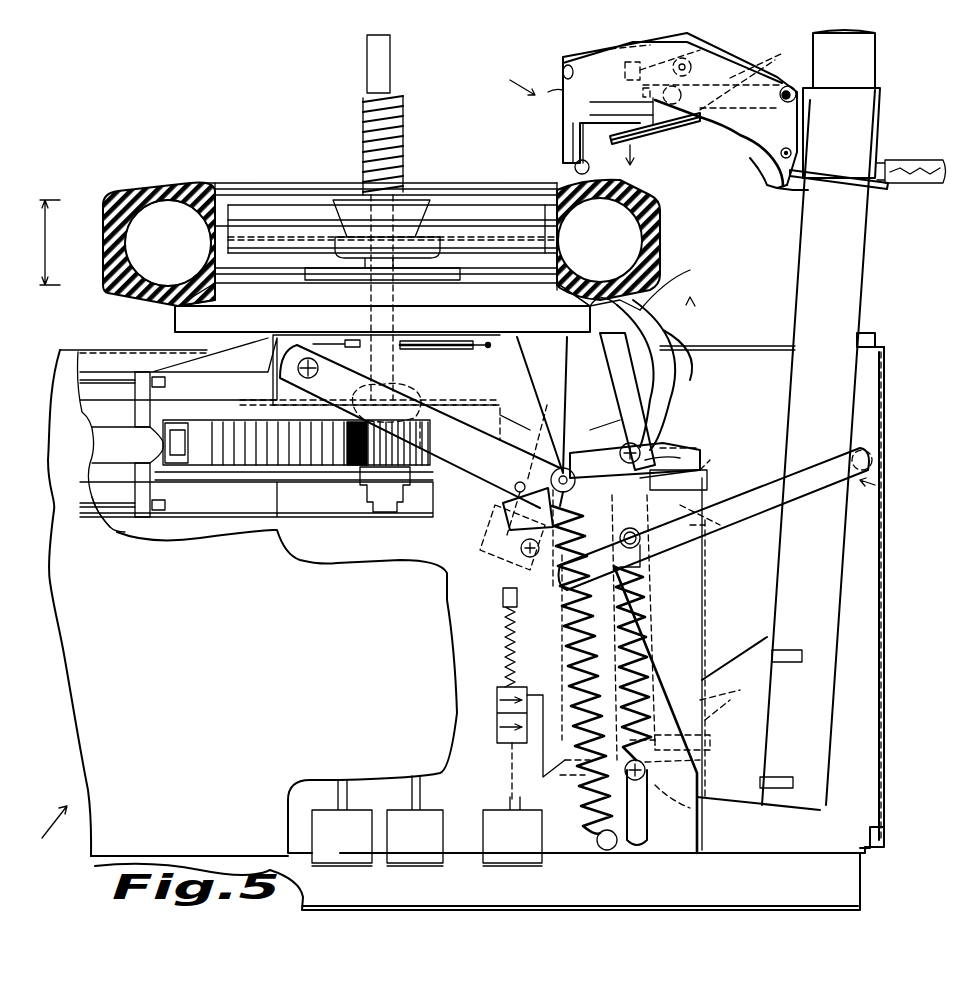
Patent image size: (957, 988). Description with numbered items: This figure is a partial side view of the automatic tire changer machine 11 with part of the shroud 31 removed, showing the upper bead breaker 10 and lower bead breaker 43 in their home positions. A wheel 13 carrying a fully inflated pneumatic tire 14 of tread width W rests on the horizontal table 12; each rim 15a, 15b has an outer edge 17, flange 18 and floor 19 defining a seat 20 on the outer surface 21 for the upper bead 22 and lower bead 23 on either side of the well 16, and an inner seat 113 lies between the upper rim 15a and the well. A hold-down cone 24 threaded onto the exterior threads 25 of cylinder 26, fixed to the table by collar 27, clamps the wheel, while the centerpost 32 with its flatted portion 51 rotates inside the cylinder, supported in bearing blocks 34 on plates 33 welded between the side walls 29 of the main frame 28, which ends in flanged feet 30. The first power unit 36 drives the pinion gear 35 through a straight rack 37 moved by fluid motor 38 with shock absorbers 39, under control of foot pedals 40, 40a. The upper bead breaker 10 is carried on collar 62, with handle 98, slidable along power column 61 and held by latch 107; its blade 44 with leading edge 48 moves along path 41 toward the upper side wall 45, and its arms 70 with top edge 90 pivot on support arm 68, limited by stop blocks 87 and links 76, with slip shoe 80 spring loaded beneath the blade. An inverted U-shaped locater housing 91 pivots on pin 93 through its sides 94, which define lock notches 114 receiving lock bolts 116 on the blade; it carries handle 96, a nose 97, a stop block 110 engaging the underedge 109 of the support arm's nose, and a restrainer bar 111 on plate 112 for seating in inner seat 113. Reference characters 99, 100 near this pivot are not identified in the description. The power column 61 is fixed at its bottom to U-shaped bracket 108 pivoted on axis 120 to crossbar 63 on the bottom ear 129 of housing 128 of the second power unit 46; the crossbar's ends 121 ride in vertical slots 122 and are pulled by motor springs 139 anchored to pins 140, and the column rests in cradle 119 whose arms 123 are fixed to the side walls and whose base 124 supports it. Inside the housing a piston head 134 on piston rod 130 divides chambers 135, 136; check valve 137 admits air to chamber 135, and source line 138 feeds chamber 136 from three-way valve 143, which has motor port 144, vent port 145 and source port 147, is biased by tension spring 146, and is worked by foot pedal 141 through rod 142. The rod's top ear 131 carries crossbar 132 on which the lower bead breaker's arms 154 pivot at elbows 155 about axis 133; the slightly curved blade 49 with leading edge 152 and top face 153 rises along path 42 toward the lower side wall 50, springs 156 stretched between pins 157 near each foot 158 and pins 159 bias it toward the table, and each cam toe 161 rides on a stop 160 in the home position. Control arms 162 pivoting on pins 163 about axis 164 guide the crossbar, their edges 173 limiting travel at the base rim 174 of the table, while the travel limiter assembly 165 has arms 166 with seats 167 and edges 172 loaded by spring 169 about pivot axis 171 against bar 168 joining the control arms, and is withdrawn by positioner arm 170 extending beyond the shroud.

The upper bead breaker 10 is at (520, 78).
The automatic tire changer machine 11 is at (45, 836).
The table 12 is at (384, 294).
The wheel 13 is at (293, 200).
The pneumatic tire 14 is at (118, 243).
The upper rim 15a is at (227, 174).
The lower rim 15b is at (228, 297).
The well 16 is at (205, 243).
The outer edge 17 is at (268, 193).
The flange 18 is at (238, 190).
The floor 19 is at (230, 212).
The seat 20 is at (545, 200).
The outer surface 21 is at (315, 186).
The upper bead 22 is at (560, 208).
The lower bead 23 is at (560, 270).
The hold-down cone 24 is at (340, 215).
The exterior threads 25 is at (405, 140).
The cylinder 26 is at (413, 109).
The collar 27 is at (345, 270).
The main frame 28 is at (338, 567).
The side walls 29 is at (287, 691).
The flanged feet 30 is at (845, 893).
The shroud 31 is at (905, 578).
The centerpost 32 is at (395, 298).
The plates 33 is at (252, 402).
The bearing block 34 is at (415, 392).
The pinion gear 35 is at (335, 470).
The first or centerpost power unit 36 is at (99, 494).
The straight rack 37 is at (225, 470).
The fluid motor 38 is at (118, 492).
The shock absorbers 39 is at (127, 445).
The foot pedal 40 is at (340, 866).
The foot pedal 40a is at (410, 866).
The general travel path 41 is at (637, 152).
The general travel path 42 is at (700, 300).
The lower bead breaker 43 is at (700, 335).
The blade 44 is at (680, 125).
The upper side wall 45 is at (598, 185).
The second or bead breaker power unit 46 is at (715, 600).
The leading edge 48 is at (615, 140).
The blade 49 is at (608, 312).
The lower side wall 50 is at (590, 290).
The flatted portion 51 is at (392, 58).
The power column 61 is at (850, 408).
The collar 62 is at (870, 110).
The crossbar 63 is at (650, 775).
The support arm 68 is at (798, 120).
The blade arm 70 is at (772, 52).
The links 76 is at (720, 58).
The slip shoe 80 is at (705, 123).
The stop blocks 87 is at (615, 40).
The top edge 90 is at (643, 93).
The locater housing 91 is at (575, 60).
The pin 93 is at (792, 153).
The side walls 94 is at (762, 128).
The handle 96 is at (563, 72).
The nose 97 is at (550, 99).
The handle 98 is at (905, 166).
The pivot 99 is at (795, 88).
The pin 100 is at (815, 79).
The latch 107 is at (885, 195).
The U-shaped bracket 108 is at (780, 710).
The underedge 109 is at (620, 75).
The stop block 110 is at (572, 120).
The restrainer bar 111 is at (575, 162).
The plate 112 is at (570, 135).
The inner seat 113 is at (520, 200).
The lock notch 114 is at (640, 100).
The lock bolt 116 is at (650, 113).
The cradle 119 is at (880, 485).
The axis 120 is at (705, 790).
The ends 121 is at (697, 768).
The vertical slot 122 is at (650, 815).
The arms 123 is at (790, 494).
The base 124 is at (872, 458).
The housing 128 is at (705, 620).
The ear 129 is at (700, 810).
The piston rod 130 is at (700, 570).
The ear 131 is at (693, 449).
The crossbar 132 is at (652, 448).
The axis 133 is at (664, 443).
The piston head 134 is at (733, 678).
The chamber 135 is at (715, 505).
The chamber 136 is at (712, 740).
The check valve 137 is at (705, 470).
The source line 138 is at (550, 782).
The motor springs 139 is at (660, 630).
The pin 140 is at (645, 540).
The foot pedal 141 is at (512, 866).
The rod 142 is at (510, 798).
The three-way valve 143 is at (497, 740).
The motor port 144 is at (525, 690).
The vent port 145 is at (497, 720).
The tension spring 146 is at (505, 645).
The source port 147 is at (498, 696).
The leading edge 152 is at (580, 300).
The top face 153 is at (672, 283).
The arm 154 is at (670, 372).
The elbows 155 is at (700, 460).
The spring 156 is at (562, 608).
The pin 157 is at (566, 468).
The foot 158 is at (543, 462).
The pin 159 is at (605, 852).
The stop 160 is at (510, 512).
The cam toe 161 is at (512, 492).
The control arms 162 is at (490, 432).
The pin 163 is at (296, 370).
The pivot axis 164 is at (305, 358).
The travel limiter assembly 165 is at (616, 392).
The travel limiter arms 166 is at (561, 405).
The seat 167 is at (604, 355).
The bar 168 is at (640, 446).
The spring 169 is at (462, 352).
The positioner arm 170 is at (358, 340).
The pivot axis 171 is at (528, 556).
The edges 172 is at (590, 420).
The edges 173 is at (452, 424).
The base rim 174 is at (500, 334).
The tread width W is at (46, 242).